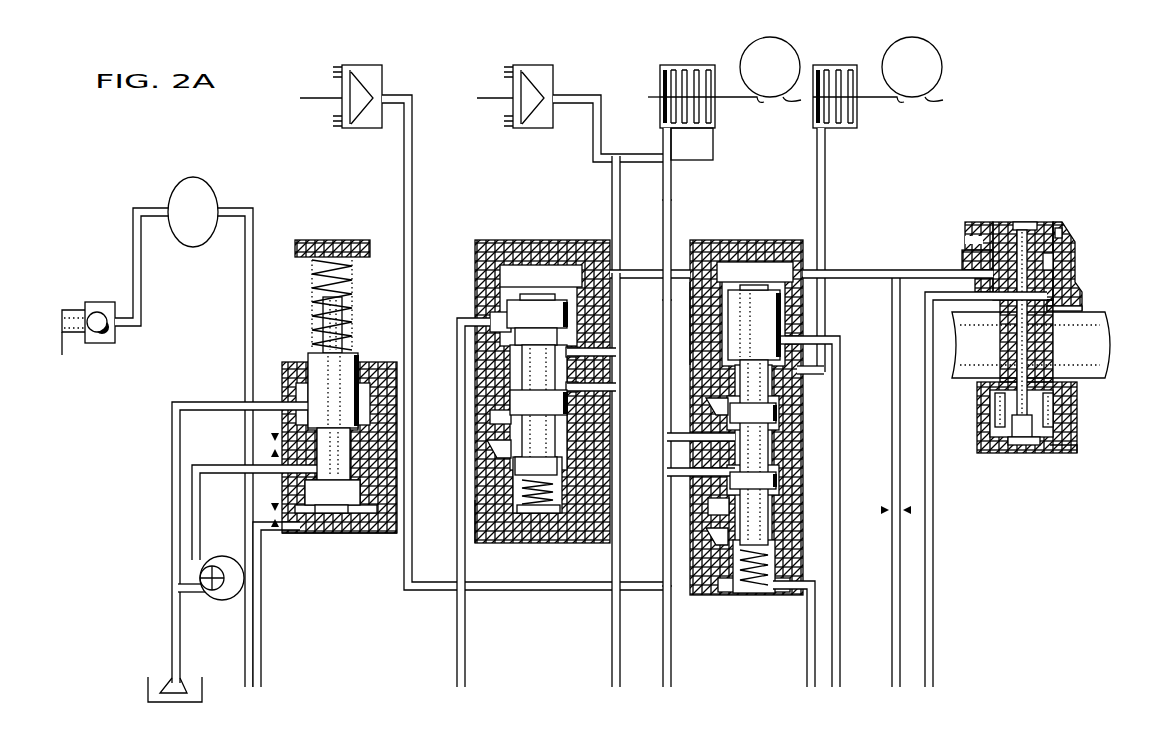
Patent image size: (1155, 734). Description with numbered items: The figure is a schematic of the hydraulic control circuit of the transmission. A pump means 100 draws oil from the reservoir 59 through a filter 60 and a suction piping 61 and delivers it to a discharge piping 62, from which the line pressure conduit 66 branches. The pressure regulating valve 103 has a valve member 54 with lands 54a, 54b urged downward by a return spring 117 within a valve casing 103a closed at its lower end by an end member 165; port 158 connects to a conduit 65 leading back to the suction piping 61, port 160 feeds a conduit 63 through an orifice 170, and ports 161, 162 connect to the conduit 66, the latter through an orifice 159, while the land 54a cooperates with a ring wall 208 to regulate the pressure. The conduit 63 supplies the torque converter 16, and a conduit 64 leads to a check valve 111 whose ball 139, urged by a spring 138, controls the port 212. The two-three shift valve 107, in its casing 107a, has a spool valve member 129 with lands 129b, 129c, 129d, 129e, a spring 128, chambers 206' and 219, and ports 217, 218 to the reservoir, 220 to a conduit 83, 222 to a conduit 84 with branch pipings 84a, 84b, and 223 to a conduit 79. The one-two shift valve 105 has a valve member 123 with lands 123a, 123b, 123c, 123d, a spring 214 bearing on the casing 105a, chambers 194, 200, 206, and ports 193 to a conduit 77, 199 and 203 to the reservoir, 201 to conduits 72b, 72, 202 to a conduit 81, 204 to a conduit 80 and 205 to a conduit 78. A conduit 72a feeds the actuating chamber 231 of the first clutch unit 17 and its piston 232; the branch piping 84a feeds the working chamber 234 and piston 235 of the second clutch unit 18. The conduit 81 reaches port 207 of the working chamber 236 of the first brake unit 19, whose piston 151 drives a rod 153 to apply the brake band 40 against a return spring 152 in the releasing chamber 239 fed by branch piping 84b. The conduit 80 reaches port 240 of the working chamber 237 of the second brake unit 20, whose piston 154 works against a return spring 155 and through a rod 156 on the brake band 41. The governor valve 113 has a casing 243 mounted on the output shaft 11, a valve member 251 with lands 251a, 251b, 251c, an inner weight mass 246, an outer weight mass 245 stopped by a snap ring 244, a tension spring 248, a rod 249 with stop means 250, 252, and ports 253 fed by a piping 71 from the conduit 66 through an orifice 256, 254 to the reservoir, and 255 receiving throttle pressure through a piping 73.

The output shaft 11 is at (1090, 344).
The torque converter 16 is at (177, 186).
The first clutch unit 17 is at (362, 60).
The second clutch unit 18 is at (534, 60).
The first brake unit 19 is at (736, 54).
The second brake unit 20 is at (869, 54).
The brake band 40 is at (768, 38).
The brake band 41 is at (930, 50).
The valve member 54 is at (318, 318).
The land 54a is at (342, 372).
The land 54b is at (338, 520).
The oil reservoir 59 is at (148, 690).
The filter 60 is at (168, 678).
The suction piping 61 is at (203, 590).
The discharge piping 62 is at (193, 527).
The conduit 63 is at (252, 244).
The conduit 64 is at (142, 275).
The conduit 65 is at (172, 464).
The line pressure conduit 66 is at (259, 670).
The piping 71 is at (850, 270).
The conduit 72 is at (672, 672).
The conduit 72a is at (414, 181).
The conduit 72b is at (661, 556).
The throttle pressure piping 73 is at (934, 549).
The conduit 77 is at (806, 672).
The conduit 78 is at (841, 672).
The conduit 79 is at (466, 672).
The conduit 80 is at (827, 196).
The conduit 81 is at (662, 246).
The conduit 83 is at (611, 672).
The conduit 84 is at (621, 198).
The branch piping 84a is at (594, 150).
The branch piping 84b is at (690, 160).
The pump means 100 is at (222, 602).
The hydraulic pressure regulating valve 103 is at (330, 232).
The valve casing 103a is at (385, 525).
The 1-2 shift valve 105 is at (757, 240).
The stationary valve casing 105a is at (712, 312).
The 2-3 shift valve 107 is at (486, 240).
The valve housing 107a is at (500, 507).
The check valve 111 is at (105, 352).
The governor valve 113 is at (1012, 216).
The return spring 117 is at (354, 280).
The valve member 123 is at (775, 439).
The smallest land 123a is at (778, 551).
The middle sized land 123b is at (778, 479).
The middle sized land 123c is at (778, 411).
The largest land 123d is at (782, 313).
The spring 128 is at (540, 508).
The spool valve member 129 is at (518, 361).
The smallest land 129b is at (515, 480).
The smaller land 129c is at (510, 404).
The smaller land 129d is at (516, 338).
The largest land 129e is at (515, 302).
The spring 138 is at (76, 308).
The ball 139 is at (99, 310).
The piston 151 is at (666, 72).
The return spring 152 is at (716, 112).
The rod 153 is at (745, 99).
The piston 154 is at (821, 108).
The return spring 155 is at (850, 113).
The rod 156 is at (878, 99).
The port 158 is at (284, 382).
The orifice 159 is at (275, 531).
The port 160 is at (270, 453).
The port 161 is at (290, 472).
The port 162 is at (296, 522).
The plug 165 is at (333, 516).
The orifice 170 is at (270, 437).
The port 193 is at (792, 584).
The chamber 194 is at (720, 586).
The port 199 is at (712, 537).
The chamber 200 is at (712, 506).
The port 201 is at (705, 474).
The port 202 is at (700, 440).
The port 203 is at (712, 406).
The port 204 is at (800, 370).
The port 205 is at (798, 340).
The chamber 206 is at (739, 251).
The end cap 206' is at (555, 255).
The port 207 is at (662, 133).
The ring wall 208 is at (300, 430).
The port 212 is at (66, 352).
The spring 214 is at (748, 586).
The port 217 is at (563, 510).
The port 218 is at (490, 447).
The chamber 219 is at (498, 417).
The port 220 is at (590, 385).
The port 222 is at (590, 351).
The port 223 is at (492, 320).
The actuating chamber 231 is at (380, 79).
The piston 232 is at (360, 112).
The working chamber 234 is at (551, 79).
The actuating piston 235 is at (540, 112).
The working chamber 236 is at (648, 97).
The working chamber 237 is at (822, 70).
The brake releasing chamber 239 is at (694, 70).
The port 240 is at (826, 128).
The casing 243 is at (1075, 401).
The snap ring 244 is at (1058, 452).
The outer weight mass 245 is at (1060, 418).
The inner weight mass 246 is at (1038, 446).
The tension spring 248 is at (993, 415).
The rod 249 is at (1020, 360).
The stop means 250 is at (1014, 438).
The valve member 251 is at (1056, 262).
The land 251a is at (1063, 242).
The land 251b is at (1070, 286).
The land 251c is at (1062, 308).
The stop means 252 is at (1034, 226).
The port 253 is at (975, 270).
The port 254 is at (980, 238).
The port 255 is at (1012, 306).
The orifice 256 is at (906, 511).